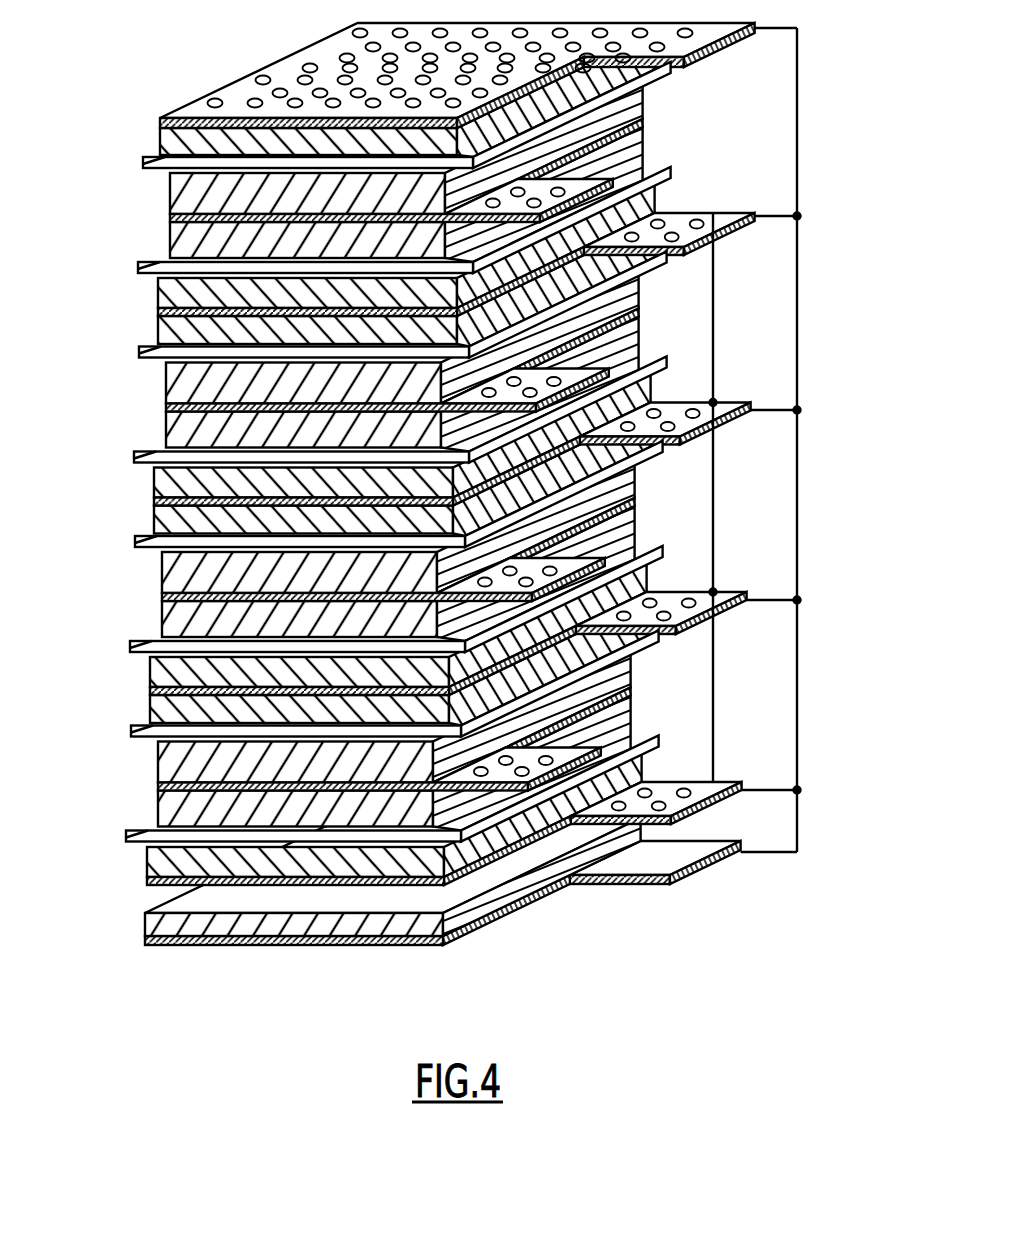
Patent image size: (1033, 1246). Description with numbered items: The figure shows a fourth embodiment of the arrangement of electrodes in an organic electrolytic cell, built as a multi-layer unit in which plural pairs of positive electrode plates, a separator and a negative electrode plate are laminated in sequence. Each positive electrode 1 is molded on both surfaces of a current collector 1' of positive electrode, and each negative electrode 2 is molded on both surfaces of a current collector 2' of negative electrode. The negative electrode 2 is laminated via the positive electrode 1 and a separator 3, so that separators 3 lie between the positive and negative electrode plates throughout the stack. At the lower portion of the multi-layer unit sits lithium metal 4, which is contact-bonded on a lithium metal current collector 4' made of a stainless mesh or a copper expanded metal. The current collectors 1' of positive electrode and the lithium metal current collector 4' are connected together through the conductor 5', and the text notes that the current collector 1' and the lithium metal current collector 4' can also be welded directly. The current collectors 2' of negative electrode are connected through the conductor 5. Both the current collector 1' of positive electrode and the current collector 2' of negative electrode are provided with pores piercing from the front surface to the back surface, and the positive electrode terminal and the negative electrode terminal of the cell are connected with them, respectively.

The positive electrode 1 is at (368, 455).
The current collector of positive electrode 1' is at (406, 454).
The negative electrode 2 is at (365, 454).
The current collector of negative electrode 2' is at (355, 455).
The separator 3 is at (623, 118).
The lithium metal 4 is at (361, 877).
The lithium metal current collector 4' is at (409, 902).
The conductor 5 is at (740, 497).
The conductor 5' is at (802, 440).